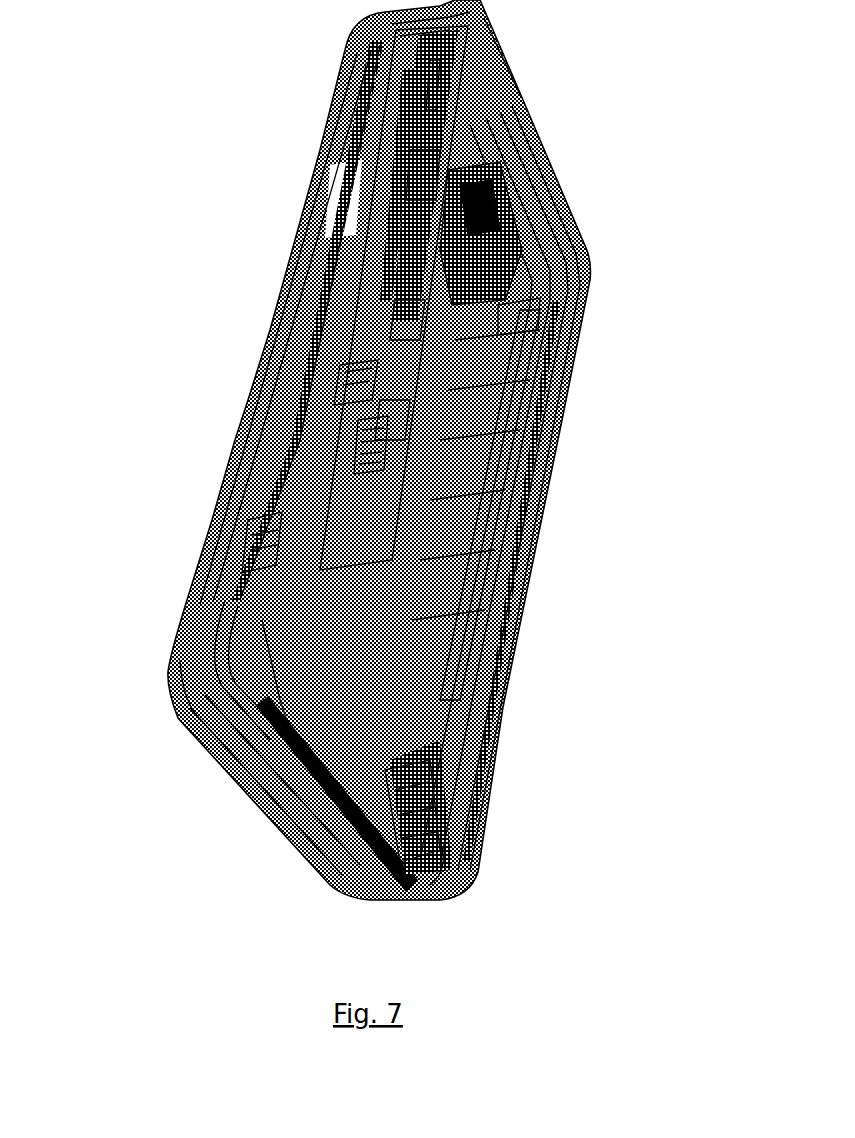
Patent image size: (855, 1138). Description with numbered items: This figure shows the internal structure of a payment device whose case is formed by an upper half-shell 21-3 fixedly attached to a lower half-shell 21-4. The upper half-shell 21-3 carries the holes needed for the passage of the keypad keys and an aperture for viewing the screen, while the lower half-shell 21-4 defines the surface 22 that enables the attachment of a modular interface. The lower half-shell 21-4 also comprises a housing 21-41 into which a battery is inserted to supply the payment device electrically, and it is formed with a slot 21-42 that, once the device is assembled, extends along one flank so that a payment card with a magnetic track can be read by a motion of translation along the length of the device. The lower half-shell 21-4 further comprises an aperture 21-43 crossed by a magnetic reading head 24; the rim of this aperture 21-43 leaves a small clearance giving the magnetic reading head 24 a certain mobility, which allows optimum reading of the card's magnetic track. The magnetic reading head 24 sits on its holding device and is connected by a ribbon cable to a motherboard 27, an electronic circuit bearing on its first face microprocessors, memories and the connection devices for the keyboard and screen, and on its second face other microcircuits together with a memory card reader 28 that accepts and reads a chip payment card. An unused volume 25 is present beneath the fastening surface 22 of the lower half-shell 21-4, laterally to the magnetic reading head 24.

The upper half-shell 21-3 is at (313, 135).
The lower half-shell 21-4 is at (537, 125).
The unused volume 25 is at (408, 290).
The aperture 21-43 is at (350, 373).
The surface 22 is at (537, 318).
The housing 21-41 is at (490, 393).
The magnetic reading head 24 is at (360, 443).
The motherboard 27 is at (263, 528).
The slot 21-42 is at (275, 685).
The memory card reader 28 is at (392, 790).